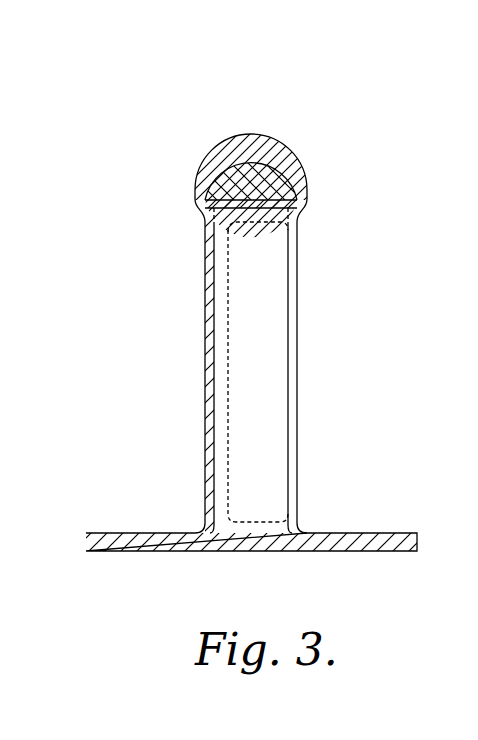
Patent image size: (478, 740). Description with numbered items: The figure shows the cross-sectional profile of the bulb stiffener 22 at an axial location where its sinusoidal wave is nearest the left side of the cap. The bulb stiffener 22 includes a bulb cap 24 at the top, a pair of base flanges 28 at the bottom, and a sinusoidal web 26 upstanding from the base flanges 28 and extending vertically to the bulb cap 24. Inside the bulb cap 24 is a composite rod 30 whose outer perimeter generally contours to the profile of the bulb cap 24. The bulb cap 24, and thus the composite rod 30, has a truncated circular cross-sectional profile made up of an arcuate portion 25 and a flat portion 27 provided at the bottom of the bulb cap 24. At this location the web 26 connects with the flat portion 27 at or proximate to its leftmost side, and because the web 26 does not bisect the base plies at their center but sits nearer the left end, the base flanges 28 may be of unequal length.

The bulb stiffener 22 is at (140, 111).
The bulb cap 24 is at (283, 143).
The arcuate portion 25 is at (305, 185).
The sinusoidal web 26 is at (207, 352).
The flat portion 27 is at (262, 203).
The base flanges 28 is at (140, 535).
The composite rod 30 is at (242, 153).